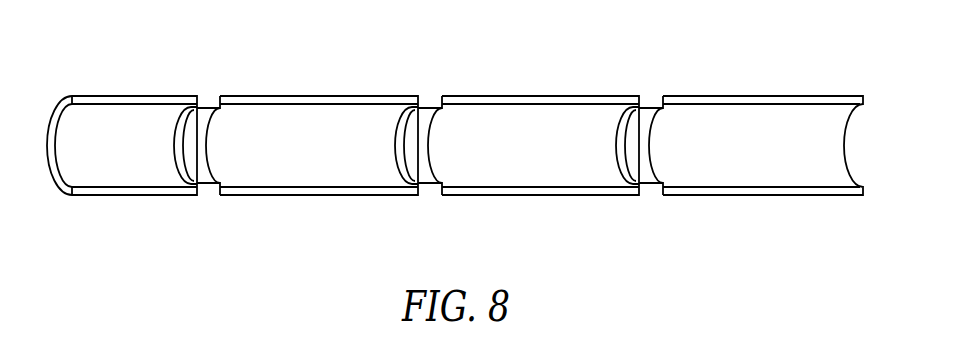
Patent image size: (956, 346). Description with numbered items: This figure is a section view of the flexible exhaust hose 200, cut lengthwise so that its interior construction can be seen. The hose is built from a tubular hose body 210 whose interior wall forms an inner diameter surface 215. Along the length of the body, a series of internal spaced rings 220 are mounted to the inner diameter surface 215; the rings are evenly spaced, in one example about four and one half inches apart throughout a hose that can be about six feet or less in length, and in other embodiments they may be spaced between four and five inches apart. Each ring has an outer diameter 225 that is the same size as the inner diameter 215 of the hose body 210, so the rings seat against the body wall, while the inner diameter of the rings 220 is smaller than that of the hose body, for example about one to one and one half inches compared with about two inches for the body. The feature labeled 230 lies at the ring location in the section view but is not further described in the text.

The flexible exhaust hose 200 is at (535, 94).
The tubular hose body 210 is at (118, 188).
The inner diameter surface 215 is at (115, 115).
The internal spaced rings 220 is at (207, 172).
The outer diameter 225 is at (180, 113).
The joint inner surface 230 is at (202, 133).